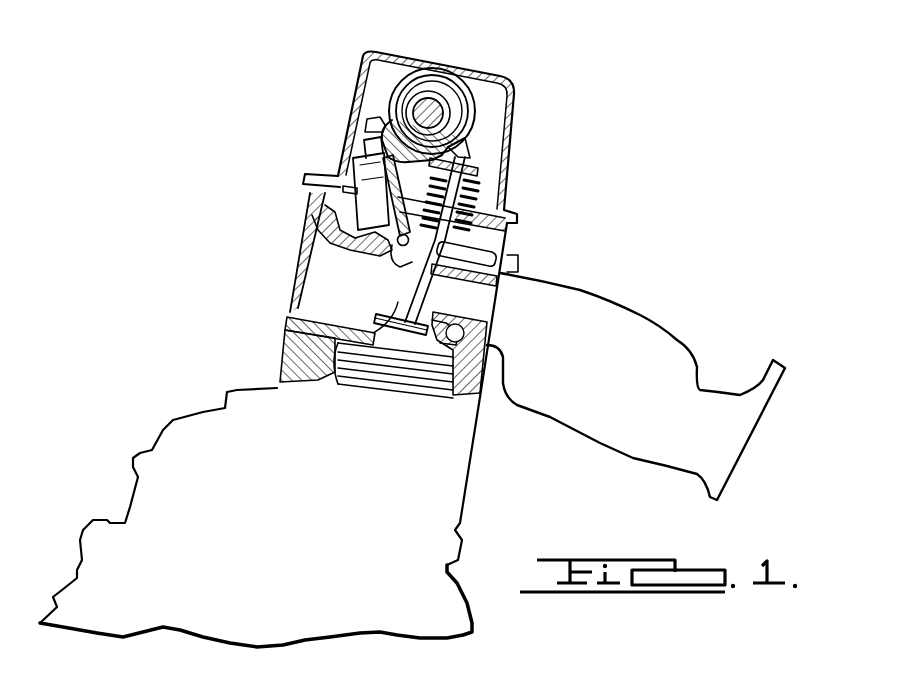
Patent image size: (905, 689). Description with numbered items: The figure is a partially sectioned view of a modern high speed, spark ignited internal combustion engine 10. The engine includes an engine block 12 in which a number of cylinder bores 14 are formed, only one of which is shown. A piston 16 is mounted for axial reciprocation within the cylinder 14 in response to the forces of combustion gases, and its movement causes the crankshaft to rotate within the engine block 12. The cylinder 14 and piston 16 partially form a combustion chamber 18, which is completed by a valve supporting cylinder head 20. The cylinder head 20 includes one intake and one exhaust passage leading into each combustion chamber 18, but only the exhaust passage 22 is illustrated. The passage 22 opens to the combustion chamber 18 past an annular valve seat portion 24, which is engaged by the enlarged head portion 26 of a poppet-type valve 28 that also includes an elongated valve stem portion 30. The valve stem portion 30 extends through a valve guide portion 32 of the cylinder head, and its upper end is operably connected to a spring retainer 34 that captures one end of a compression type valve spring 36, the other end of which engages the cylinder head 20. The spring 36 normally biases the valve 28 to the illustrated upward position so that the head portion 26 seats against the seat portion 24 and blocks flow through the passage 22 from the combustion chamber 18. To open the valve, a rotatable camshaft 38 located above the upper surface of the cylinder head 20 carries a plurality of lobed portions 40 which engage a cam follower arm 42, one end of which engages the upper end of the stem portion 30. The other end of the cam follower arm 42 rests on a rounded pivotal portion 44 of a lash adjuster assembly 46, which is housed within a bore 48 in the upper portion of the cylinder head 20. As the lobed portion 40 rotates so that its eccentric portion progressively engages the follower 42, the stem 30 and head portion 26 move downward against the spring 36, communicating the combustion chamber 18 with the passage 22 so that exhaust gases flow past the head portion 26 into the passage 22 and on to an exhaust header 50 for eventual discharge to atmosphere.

The engine 10 is at (222, 383).
The engine block 12 is at (443, 478).
The cylinder bore 14 is at (330, 372).
The piston 16 is at (366, 388).
The combustion chamber 18 is at (433, 382).
The cylinder head 20 is at (515, 229).
The exhaust passage 22 is at (490, 280).
The valve seat portion 24 is at (382, 325).
The head portion 26 is at (370, 382).
The poppet-type valve 28 is at (427, 305).
The valve stem portion 30 is at (410, 260).
The valve guide portion 32 is at (495, 256).
The spring retainer 34 is at (470, 170).
The valve spring 36 is at (478, 190).
The camshaft 38 is at (437, 110).
The lobed portion 40 is at (438, 90).
The cam follower arm 42 is at (463, 152).
The rounded pivotal portion 44 is at (385, 124).
The lash adjuster assembly 46 is at (362, 167).
The bore 48 is at (345, 188).
The exhaust header 50 is at (632, 333).